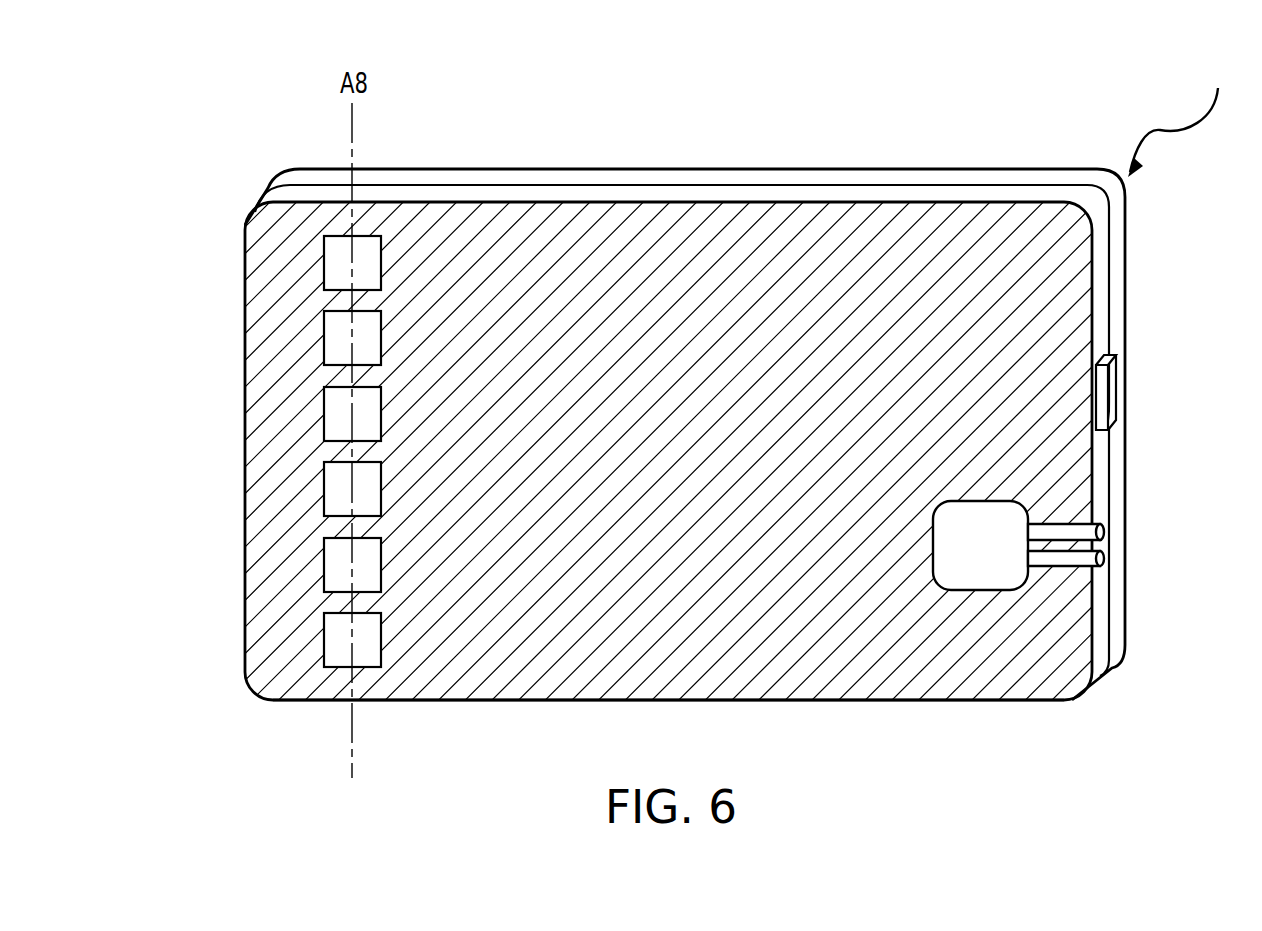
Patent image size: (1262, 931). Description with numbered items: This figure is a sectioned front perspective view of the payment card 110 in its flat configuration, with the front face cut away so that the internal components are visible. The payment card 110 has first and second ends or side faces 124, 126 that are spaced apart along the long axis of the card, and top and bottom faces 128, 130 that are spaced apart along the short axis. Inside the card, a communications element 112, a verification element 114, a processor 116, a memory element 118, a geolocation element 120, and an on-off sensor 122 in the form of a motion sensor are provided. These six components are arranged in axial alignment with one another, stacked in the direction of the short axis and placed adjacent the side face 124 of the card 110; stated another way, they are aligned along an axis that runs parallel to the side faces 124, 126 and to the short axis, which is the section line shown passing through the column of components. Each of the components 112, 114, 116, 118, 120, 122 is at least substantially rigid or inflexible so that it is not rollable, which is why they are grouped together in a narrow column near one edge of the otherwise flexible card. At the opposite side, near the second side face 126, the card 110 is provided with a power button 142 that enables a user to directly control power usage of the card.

The payment card 110 is at (1190, 116).
The communications element 112 is at (330, 262).
The verification element 114 is at (330, 337).
The processor 116 is at (330, 413).
The memory element 118 is at (330, 488).
The geolocation element 120 is at (330, 564).
The on-off sensor 122 is at (330, 639).
The first side face 124 is at (246, 297).
The second side face 126 is at (1101, 268).
The top face 128 is at (632, 178).
The bottom face 130 is at (815, 701).
The power button 142 is at (1108, 388).